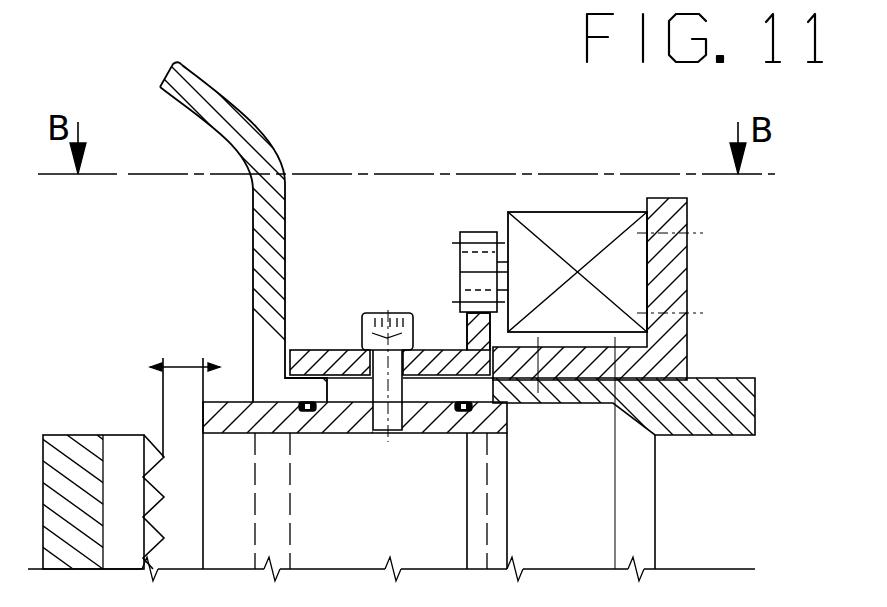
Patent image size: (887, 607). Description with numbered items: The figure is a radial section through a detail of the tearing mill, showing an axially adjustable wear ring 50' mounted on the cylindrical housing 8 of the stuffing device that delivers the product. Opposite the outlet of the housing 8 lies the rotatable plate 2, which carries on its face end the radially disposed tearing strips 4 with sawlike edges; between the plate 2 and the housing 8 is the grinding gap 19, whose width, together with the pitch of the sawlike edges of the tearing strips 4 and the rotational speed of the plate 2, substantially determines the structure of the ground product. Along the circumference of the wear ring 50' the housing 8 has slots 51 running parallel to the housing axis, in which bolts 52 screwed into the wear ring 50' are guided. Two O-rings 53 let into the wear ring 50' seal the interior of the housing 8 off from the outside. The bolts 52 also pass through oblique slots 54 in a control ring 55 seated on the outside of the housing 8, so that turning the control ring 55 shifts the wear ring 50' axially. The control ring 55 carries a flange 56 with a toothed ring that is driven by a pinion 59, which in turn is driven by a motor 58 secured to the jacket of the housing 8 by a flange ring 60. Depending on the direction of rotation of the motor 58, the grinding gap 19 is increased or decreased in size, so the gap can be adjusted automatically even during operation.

The plate 2 is at (58, 435).
The tearing strips 4 is at (123, 428).
The grinding gap 19 is at (182, 367).
The axially adjustable wear ring 50' is at (327, 232).
The slots 51 is at (420, 433).
The bolts 52 is at (378, 315).
The O-rings 53 is at (322, 418).
The oblique slots 54 is at (343, 350).
The control ring 55 is at (437, 353).
The flange 56 is at (465, 333).
The motor 58 is at (585, 222).
The pinion 59 is at (473, 232).
The flange ring 60 is at (693, 277).
The cylindrical housing 8 is at (730, 387).